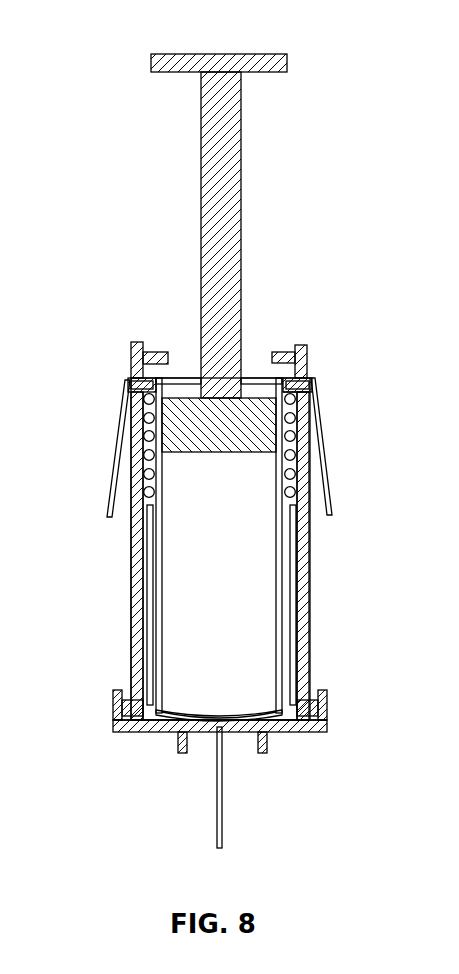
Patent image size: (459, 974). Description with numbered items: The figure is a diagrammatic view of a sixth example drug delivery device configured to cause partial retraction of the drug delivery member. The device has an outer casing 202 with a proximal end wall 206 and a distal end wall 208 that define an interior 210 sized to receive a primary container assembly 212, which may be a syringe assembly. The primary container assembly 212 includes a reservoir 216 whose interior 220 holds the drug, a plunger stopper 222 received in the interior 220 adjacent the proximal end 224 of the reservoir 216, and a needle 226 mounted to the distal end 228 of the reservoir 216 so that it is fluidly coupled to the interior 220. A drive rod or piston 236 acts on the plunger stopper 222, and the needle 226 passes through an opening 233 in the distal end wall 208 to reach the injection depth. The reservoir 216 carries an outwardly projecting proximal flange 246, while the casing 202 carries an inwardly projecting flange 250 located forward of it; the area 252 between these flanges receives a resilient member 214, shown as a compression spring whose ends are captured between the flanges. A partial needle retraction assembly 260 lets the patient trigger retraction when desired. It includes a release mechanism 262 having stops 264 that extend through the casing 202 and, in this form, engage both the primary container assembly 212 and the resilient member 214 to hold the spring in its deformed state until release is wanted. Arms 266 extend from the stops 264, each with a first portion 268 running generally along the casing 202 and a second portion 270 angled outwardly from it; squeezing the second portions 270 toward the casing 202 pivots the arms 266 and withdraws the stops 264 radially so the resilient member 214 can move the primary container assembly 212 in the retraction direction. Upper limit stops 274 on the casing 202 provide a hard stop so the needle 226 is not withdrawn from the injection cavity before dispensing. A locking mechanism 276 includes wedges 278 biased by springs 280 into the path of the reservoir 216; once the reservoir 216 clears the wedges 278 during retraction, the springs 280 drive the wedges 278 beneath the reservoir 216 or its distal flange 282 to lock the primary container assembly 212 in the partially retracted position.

The outer casing 202 is at (297, 647).
The proximal end wall 206 is at (170, 54).
The distal end wall 208 is at (308, 734).
The interior 210 is at (291, 588).
The primary container assembly 212 is at (291, 618).
The resilient member 214 is at (140, 418).
The reservoir 216 is at (153, 635).
The reservoir interior 220 is at (177, 598).
The plunger stopper 222 is at (265, 405).
The proximal end 224 is at (303, 393).
The needle 226 is at (223, 807).
The distal end 228 is at (251, 740).
The opening 233 is at (197, 740).
The drive rod or piston 236 is at (241, 118).
The proximal flange 246 is at (298, 362).
The inwardly projecting flange 250 is at (295, 510).
The area 252 is at (128, 395).
The partial needle retraction assembly 260 is at (116, 341).
The release mechanism 262 is at (108, 508).
The stops 264 is at (148, 377).
The arms 266 is at (323, 493).
The first portion 268 is at (312, 448).
The second portion 270 is at (113, 498).
The upper limit stops 274 is at (277, 352).
The locking mechanism 276 is at (302, 698).
The wedges 278 is at (132, 704).
The springs 280 is at (118, 738).
The distal flange 282 is at (147, 726).